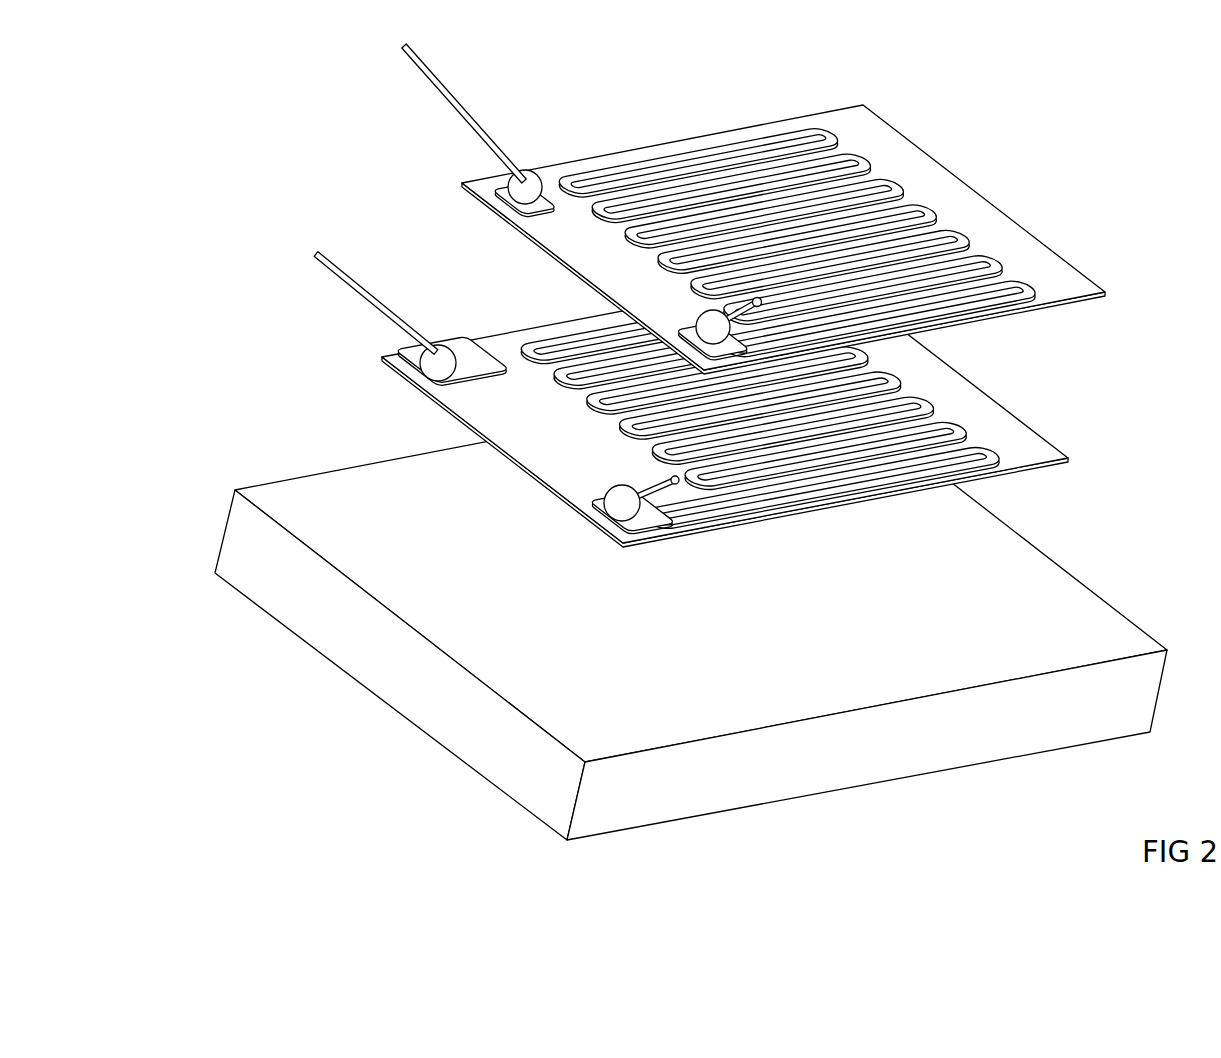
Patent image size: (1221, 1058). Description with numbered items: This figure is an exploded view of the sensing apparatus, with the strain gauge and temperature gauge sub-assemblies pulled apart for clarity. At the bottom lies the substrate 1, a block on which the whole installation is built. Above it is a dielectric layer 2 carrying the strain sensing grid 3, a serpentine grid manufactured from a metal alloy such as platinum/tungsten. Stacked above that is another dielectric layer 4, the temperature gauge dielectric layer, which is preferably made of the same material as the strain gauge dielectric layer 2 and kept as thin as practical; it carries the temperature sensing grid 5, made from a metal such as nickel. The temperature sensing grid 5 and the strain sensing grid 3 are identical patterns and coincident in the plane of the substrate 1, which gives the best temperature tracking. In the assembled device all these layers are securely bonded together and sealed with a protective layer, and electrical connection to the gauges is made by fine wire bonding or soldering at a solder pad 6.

The substrate 1 is at (313, 520).
The dielectric layer 2 is at (495, 432).
The strain sensing grid 3 is at (583, 511).
The dielectric layer 4 is at (1003, 228).
The temperature sensing grid 5 is at (817, 132).
The solder pad 6 is at (647, 533).